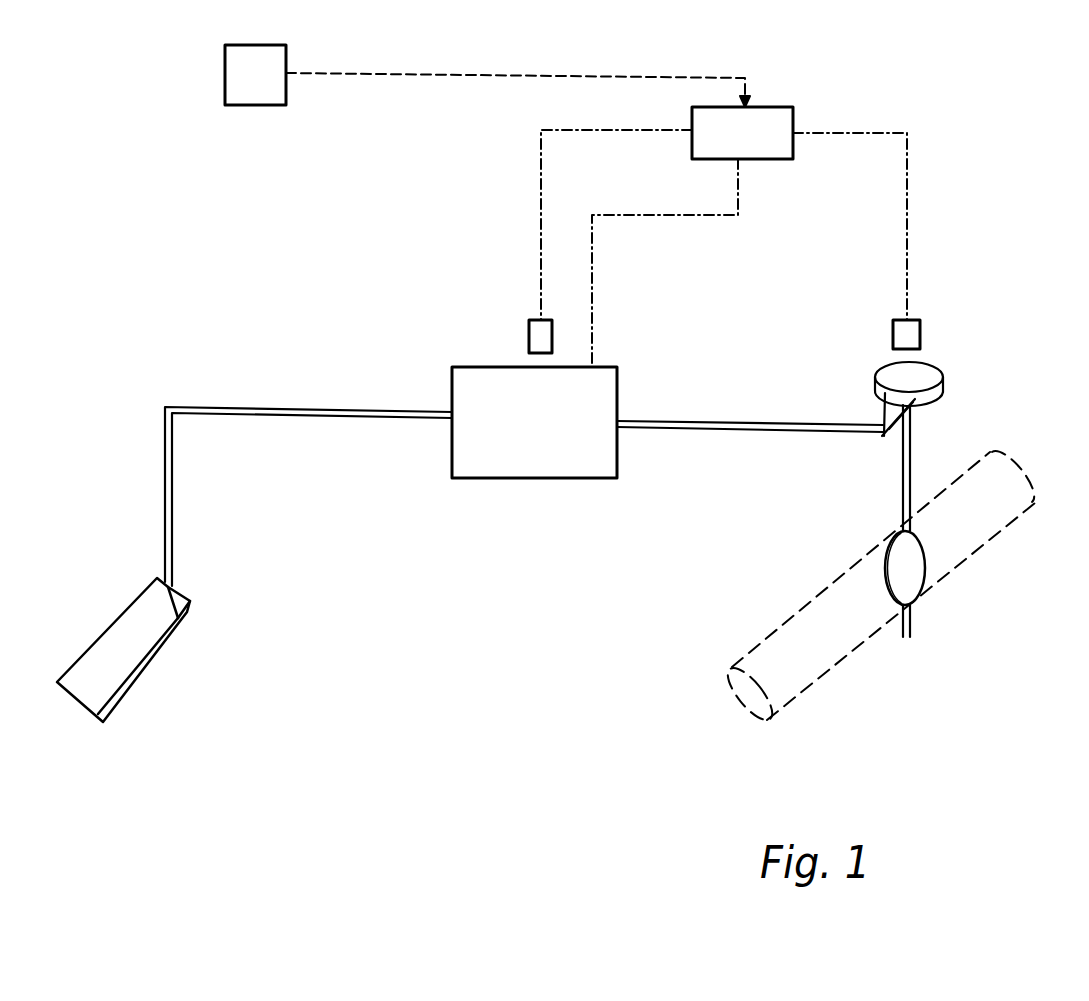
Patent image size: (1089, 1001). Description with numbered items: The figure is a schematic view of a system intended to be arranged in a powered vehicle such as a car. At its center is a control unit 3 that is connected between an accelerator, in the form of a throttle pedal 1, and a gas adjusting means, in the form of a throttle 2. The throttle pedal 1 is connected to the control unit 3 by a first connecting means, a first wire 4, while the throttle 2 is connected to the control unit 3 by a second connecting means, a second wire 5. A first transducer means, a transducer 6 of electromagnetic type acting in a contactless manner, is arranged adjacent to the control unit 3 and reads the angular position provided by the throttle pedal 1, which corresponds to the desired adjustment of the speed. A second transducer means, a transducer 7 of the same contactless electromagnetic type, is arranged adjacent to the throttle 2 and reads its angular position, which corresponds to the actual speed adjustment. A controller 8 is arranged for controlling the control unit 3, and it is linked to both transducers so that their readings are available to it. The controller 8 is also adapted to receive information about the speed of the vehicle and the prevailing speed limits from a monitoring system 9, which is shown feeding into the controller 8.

The throttle pedal 1 is at (112, 637).
The throttle 2 is at (913, 568).
The control unit 3 is at (529, 520).
The first wire 4 is at (283, 408).
The second wire 5 is at (695, 418).
The transducer 6 is at (537, 335).
The transducer 7 is at (908, 333).
The controller 8 is at (782, 128).
The monitoring system 9 is at (247, 87).